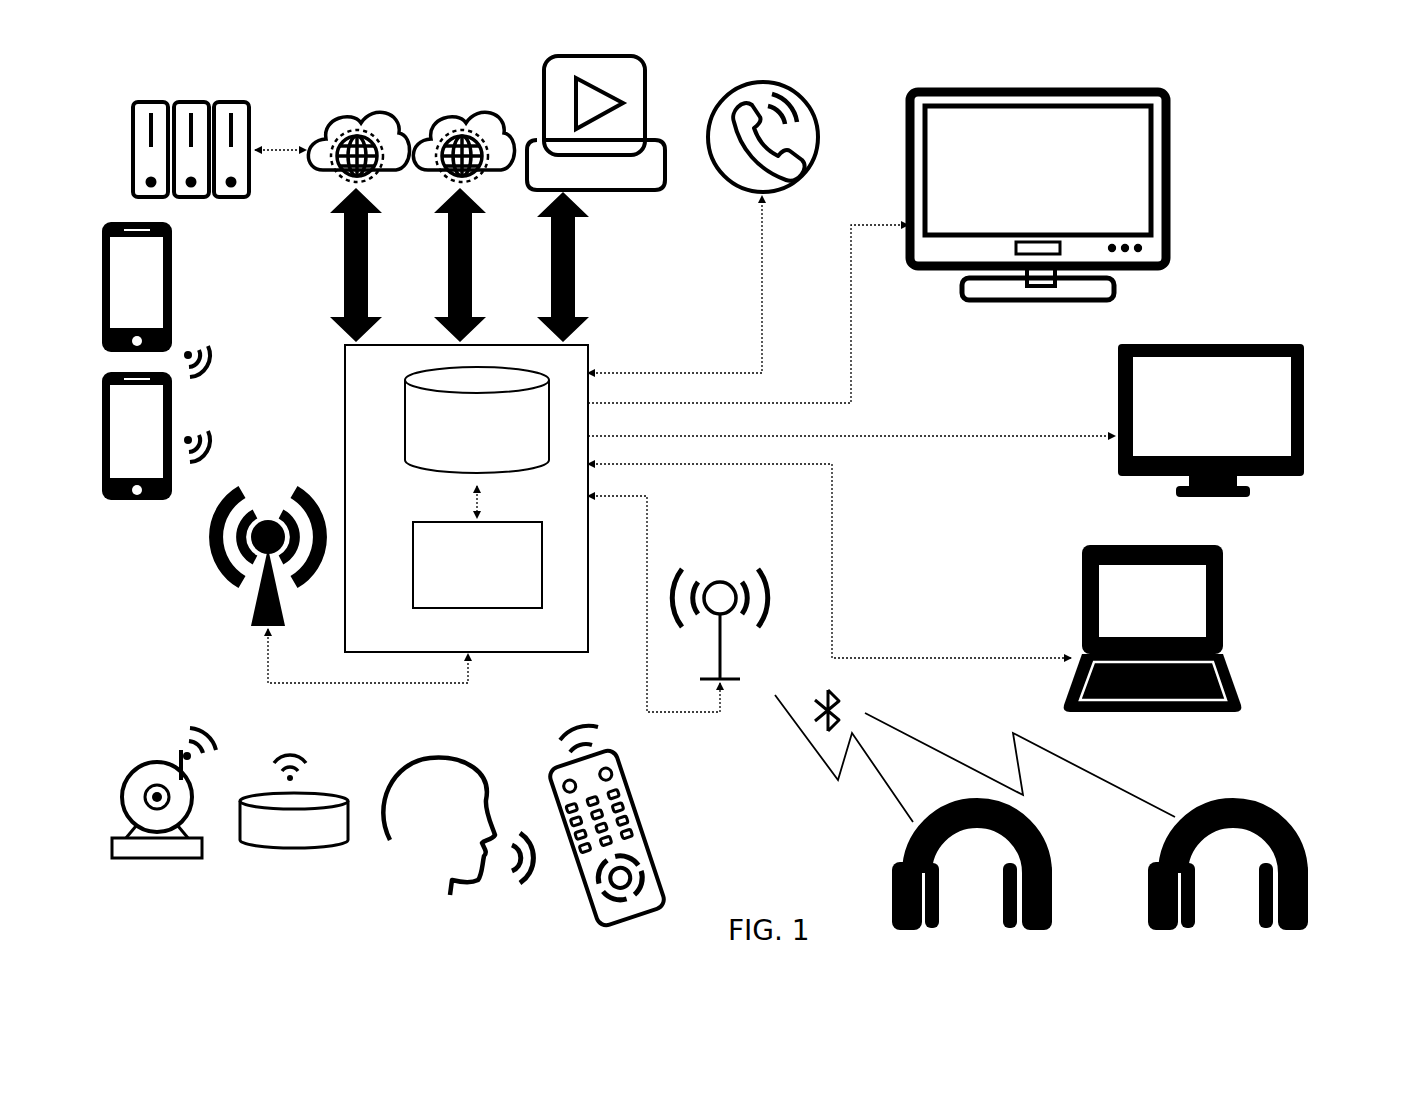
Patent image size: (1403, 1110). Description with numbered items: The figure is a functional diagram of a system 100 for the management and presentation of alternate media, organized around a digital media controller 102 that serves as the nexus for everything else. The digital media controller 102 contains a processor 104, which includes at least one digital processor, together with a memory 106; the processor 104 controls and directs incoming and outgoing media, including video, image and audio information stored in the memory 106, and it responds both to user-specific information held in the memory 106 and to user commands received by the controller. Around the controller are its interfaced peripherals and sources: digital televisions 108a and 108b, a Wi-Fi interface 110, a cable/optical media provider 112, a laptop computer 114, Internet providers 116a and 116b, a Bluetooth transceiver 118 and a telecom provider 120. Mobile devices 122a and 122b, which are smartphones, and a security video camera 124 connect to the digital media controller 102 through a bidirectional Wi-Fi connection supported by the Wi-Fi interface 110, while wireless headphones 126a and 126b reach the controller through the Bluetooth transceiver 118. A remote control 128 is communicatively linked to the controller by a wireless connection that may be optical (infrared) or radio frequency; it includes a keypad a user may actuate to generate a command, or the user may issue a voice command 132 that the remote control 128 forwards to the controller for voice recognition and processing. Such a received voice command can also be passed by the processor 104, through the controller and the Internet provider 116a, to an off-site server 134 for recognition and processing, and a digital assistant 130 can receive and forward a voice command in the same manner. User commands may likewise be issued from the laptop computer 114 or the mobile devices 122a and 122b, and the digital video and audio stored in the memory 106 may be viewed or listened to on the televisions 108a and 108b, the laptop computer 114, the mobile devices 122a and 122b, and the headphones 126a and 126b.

The system 100 is at (185, 78).
The digital media controller 102 is at (343, 435).
The processor 104 is at (477, 565).
The memory 106 is at (477, 442).
The digital television 108a is at (1166, 235).
The digital television 108b is at (1304, 419).
The Wi-Fi interface 110 is at (253, 603).
The cable/optical media provider 112 is at (648, 107).
The laptop computer 114 is at (1225, 598).
The Internet provider 116a is at (334, 123).
The Internet provider 116b is at (427, 133).
The Bluetooth transceiver 118 is at (731, 569).
The telecom provider 120 is at (825, 135).
The mobile device 122a is at (175, 270).
The mobile device 122b is at (150, 502).
The security video camera 124 is at (157, 858).
The wireless headphones 126a is at (1053, 905).
The wireless headphones 126b is at (1309, 905).
The remote control 128 is at (650, 890).
The digital assistant 130 is at (302, 857).
The voice command 132 is at (510, 880).
The off-site server 134 is at (252, 182).